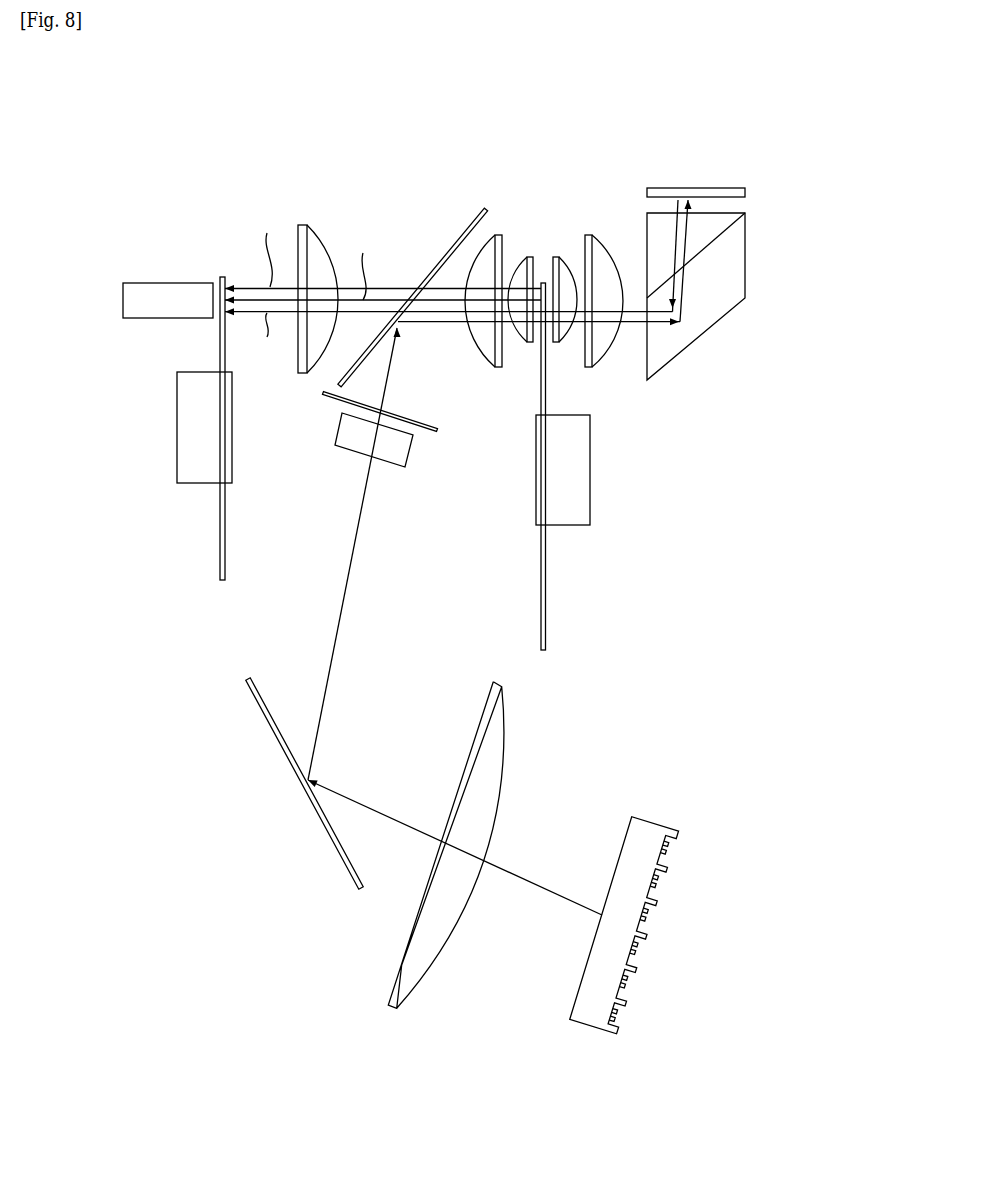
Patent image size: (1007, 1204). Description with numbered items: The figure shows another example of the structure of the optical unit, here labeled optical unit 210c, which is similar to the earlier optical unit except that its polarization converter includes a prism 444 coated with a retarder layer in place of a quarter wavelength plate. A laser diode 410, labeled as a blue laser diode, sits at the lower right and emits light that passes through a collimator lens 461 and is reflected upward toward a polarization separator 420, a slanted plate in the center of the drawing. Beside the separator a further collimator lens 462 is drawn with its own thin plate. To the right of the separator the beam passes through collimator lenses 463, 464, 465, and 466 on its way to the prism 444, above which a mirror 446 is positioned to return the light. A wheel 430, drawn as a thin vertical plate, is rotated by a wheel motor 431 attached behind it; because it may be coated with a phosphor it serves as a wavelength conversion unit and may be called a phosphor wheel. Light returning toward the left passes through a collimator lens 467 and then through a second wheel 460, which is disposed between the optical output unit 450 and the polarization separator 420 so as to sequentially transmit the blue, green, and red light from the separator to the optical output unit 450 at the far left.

The optical unit 210c is at (138, 103).
The laser diode 410 is at (652, 822).
The polarization separator 420 is at (443, 257).
The wheel 430 is at (547, 395).
The wheel motor 431 is at (590, 508).
The prism 444 is at (747, 267).
The mirror 446 is at (722, 188).
The optical output unit 450 is at (123, 300).
The second wheel 460 is at (222, 532).
The collimator lens 461 is at (505, 718).
The collimator lens 462 is at (347, 452).
The collimator lens 463 is at (495, 235).
The collimator lens 464 is at (528, 257).
The collimator lens 465 is at (553, 257).
The collimator lens 466 is at (587, 233).
The collimator lens 467 is at (298, 225).